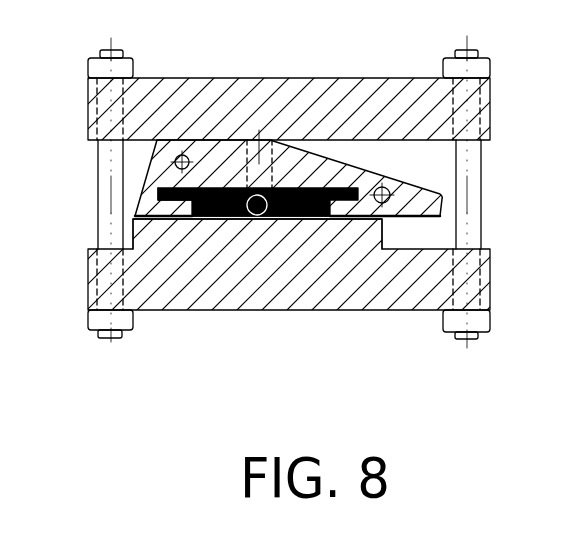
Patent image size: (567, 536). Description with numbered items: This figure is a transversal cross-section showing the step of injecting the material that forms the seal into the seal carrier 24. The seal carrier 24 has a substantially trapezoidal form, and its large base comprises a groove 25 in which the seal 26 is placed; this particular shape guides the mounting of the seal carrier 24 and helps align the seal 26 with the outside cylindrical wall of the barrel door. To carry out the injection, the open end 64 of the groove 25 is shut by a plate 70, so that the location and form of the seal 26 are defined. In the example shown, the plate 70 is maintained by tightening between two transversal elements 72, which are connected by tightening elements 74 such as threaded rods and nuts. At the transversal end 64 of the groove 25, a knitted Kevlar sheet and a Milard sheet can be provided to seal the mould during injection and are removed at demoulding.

The seal carrier 24 is at (393, 183).
The groove 25 is at (157, 197).
The seal 26 is at (292, 222).
The open end of the groove 64 is at (390, 218).
The plate 70 is at (363, 222).
The transversal elements 72 is at (193, 87).
The tightening elements 74 is at (102, 228).